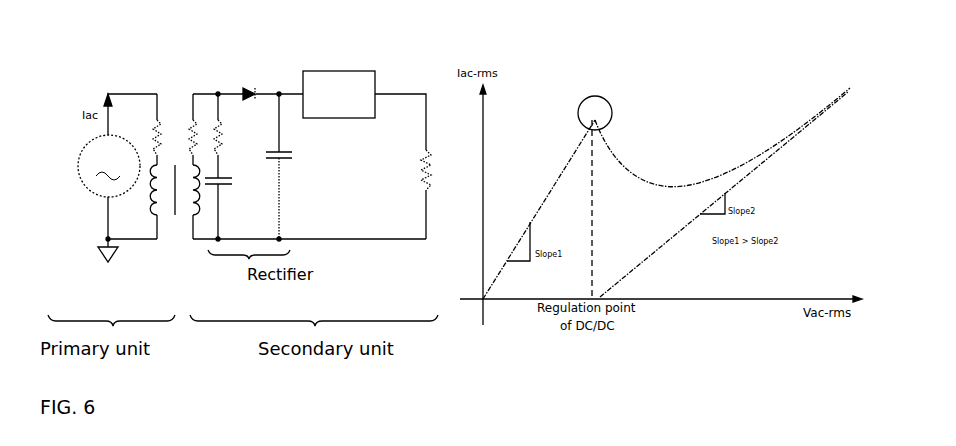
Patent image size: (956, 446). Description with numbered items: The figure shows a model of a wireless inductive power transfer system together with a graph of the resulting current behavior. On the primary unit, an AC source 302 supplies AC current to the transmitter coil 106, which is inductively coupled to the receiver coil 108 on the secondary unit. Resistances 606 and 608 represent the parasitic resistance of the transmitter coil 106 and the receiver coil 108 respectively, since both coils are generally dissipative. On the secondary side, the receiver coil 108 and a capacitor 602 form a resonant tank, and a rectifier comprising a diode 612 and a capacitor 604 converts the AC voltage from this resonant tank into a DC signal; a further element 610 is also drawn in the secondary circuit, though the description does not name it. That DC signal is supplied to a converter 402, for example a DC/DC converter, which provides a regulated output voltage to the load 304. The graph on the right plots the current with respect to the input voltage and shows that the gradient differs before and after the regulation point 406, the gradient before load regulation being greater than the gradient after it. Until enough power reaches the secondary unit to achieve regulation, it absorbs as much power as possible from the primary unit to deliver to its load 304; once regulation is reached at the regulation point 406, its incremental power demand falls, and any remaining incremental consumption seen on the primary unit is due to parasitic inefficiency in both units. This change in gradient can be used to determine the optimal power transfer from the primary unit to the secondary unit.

The AC source 302 is at (96, 142).
The transmitter coil 106 is at (158, 212).
The parasitic resistance of the transmitter coil 606 is at (162, 128).
The parasitic resistance of the receiver coil 608 is at (194, 128).
The receiver coil 108 is at (193, 216).
The diode 612 is at (245, 84).
The inductor 610 is at (221, 127).
The capacitor 602 is at (228, 180).
The capacitor 604 is at (290, 165).
The converter 402 is at (361, 70).
The load 304 is at (428, 152).
The regulation point 406 is at (603, 99).